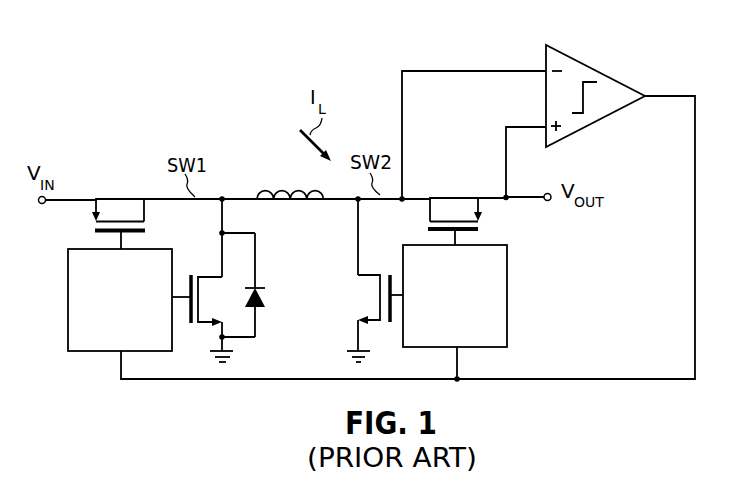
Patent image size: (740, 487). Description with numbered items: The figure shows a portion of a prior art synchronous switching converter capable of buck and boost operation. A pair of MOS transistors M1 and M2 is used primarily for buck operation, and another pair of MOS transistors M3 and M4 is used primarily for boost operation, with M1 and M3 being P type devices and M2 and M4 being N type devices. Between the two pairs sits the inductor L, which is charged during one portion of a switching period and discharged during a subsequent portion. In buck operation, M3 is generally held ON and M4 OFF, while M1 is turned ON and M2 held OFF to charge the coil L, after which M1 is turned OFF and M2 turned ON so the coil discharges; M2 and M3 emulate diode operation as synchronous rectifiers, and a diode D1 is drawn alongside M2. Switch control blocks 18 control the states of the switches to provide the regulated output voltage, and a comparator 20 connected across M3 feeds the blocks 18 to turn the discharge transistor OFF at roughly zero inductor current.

The switch control blocks 18 is at (67, 323).
The comparator 20 is at (588, 63).
The MOS transistor M1 is at (118, 209).
The MOS transistor M2 is at (197, 284).
The MOS transistor M3 is at (455, 208).
The MOS transistor M4 is at (380, 282).
The diode D1 is at (259, 287).
The inductor L is at (262, 187).